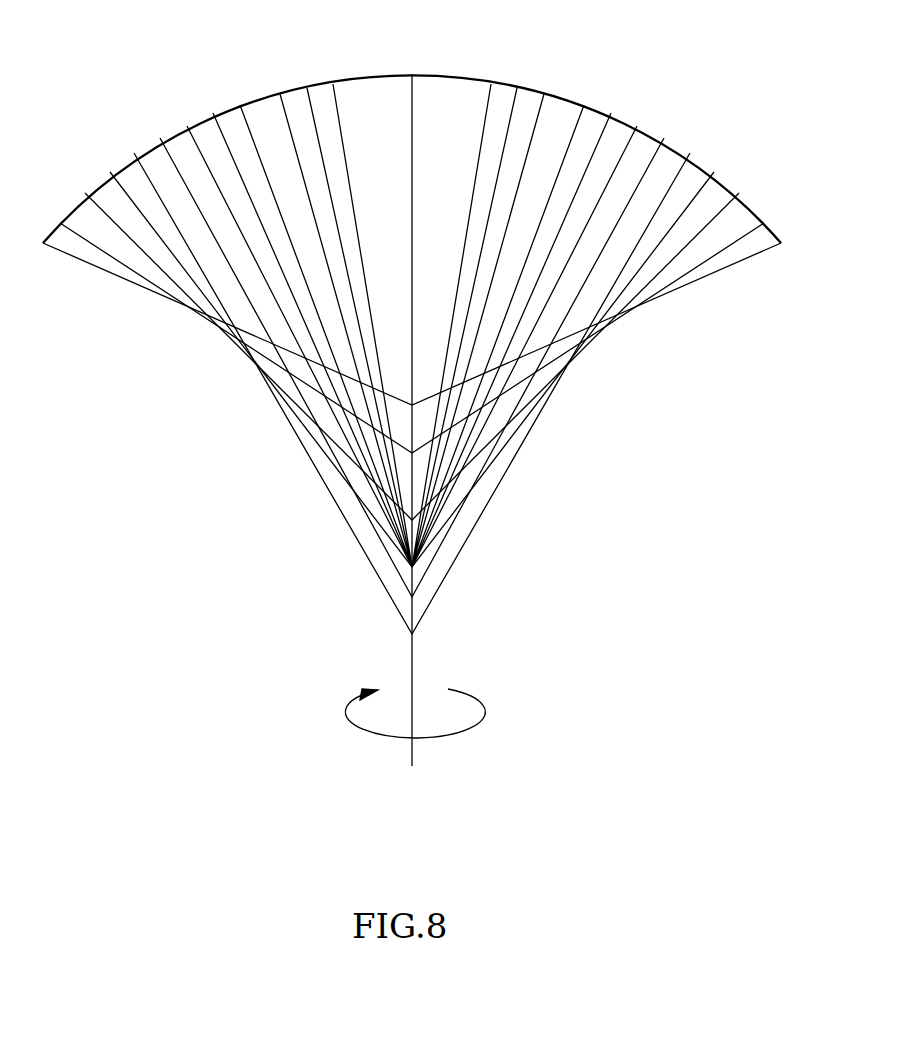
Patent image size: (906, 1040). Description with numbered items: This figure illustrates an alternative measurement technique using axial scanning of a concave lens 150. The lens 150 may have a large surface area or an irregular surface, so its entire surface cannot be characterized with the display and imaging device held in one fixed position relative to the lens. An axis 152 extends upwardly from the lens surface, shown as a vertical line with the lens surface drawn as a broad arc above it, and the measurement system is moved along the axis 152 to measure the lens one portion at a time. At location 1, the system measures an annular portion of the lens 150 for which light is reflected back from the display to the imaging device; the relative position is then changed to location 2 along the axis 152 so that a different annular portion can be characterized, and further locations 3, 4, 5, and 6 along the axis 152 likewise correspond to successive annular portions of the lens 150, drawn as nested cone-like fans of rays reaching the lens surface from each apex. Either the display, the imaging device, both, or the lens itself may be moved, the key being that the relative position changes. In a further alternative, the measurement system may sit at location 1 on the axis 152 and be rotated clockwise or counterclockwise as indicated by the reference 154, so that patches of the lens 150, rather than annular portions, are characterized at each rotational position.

The location 1 is at (412, 634).
The location 2 is at (412, 597).
The third conical scan beam 3 is at (412, 567).
The fourth conical scan beam 4 is at (412, 520).
The fifth conical scan beam 5 is at (412, 453).
The sixth conical scan beam 6 is at (412, 405).
The concave lens 150 is at (684, 144).
The axis 152 is at (421, 115).
The rotation 154 is at (371, 735).